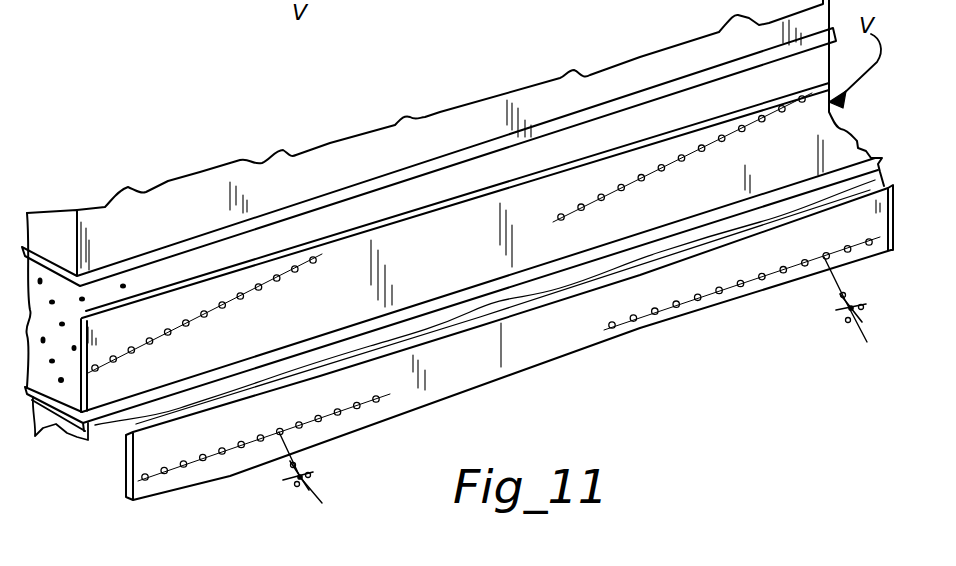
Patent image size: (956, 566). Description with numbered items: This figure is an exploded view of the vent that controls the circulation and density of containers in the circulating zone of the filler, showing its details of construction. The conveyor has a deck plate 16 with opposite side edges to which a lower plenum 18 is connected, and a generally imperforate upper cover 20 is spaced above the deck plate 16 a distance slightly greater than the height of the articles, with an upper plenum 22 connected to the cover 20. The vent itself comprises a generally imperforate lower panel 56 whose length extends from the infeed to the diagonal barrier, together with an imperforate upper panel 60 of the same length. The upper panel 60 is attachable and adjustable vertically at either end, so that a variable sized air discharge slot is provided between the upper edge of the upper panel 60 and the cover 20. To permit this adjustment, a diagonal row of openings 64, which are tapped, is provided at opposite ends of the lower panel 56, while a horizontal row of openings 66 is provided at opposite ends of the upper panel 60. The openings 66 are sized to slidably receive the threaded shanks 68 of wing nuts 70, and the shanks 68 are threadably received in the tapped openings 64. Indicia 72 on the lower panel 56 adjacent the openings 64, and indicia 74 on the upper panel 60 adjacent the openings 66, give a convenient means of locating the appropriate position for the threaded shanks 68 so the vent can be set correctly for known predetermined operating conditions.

The deck plate 16 is at (68, 396).
The lower plenum 18 is at (74, 436).
The upper cover 20 is at (452, 157).
The upper plenum 22 is at (290, 172).
The lower panel 56 is at (450, 274).
The upper panel 60 is at (537, 347).
The diagonal row of openings 64 is at (262, 288).
The horizontal row of openings 66 is at (186, 468).
The threaded shanks 68 is at (303, 463).
The wing nuts 70 is at (320, 503).
The indicia 72 is at (203, 314).
The indicia 74 is at (262, 441).